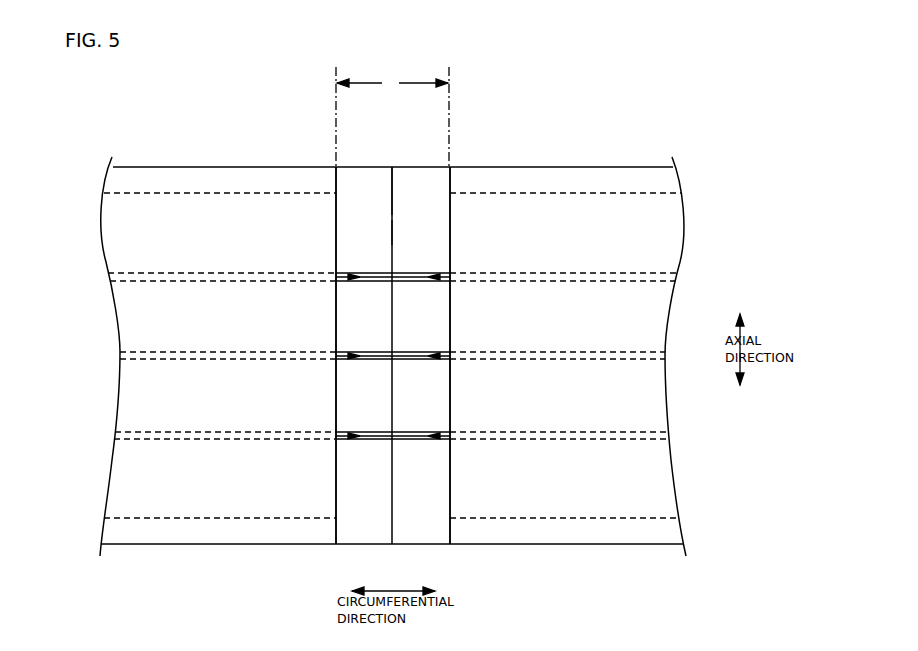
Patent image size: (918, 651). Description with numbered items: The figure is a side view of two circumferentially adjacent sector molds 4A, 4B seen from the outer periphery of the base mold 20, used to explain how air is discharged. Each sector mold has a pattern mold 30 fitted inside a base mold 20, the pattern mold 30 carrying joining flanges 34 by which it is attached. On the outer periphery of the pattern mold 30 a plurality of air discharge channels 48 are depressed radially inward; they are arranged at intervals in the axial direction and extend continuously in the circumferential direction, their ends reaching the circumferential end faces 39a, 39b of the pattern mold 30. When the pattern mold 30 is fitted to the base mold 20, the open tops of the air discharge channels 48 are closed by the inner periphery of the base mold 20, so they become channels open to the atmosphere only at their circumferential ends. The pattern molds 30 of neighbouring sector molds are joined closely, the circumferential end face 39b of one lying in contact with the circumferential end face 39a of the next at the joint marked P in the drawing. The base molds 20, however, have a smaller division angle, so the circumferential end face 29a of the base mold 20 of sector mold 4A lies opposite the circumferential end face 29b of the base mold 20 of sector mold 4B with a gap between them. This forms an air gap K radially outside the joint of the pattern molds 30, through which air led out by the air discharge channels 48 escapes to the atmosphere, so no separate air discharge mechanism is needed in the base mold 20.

The base mold 20 is at (151, 164).
The sector mold 4A is at (236, 146).
The sector mold 4B is at (582, 146).
The joining flange 34 is at (306, 177).
The pattern mold 30 is at (351, 163).
The air gap K is at (392, 84).
The circumferential end face 39a is at (392, 202).
The circumferential end face 39b is at (392, 215).
The center position P is at (392, 234).
The air discharge channel 48 is at (127, 275).
The circumferential end face 29a is at (336, 503).
The circumferential end face 29b is at (450, 503).